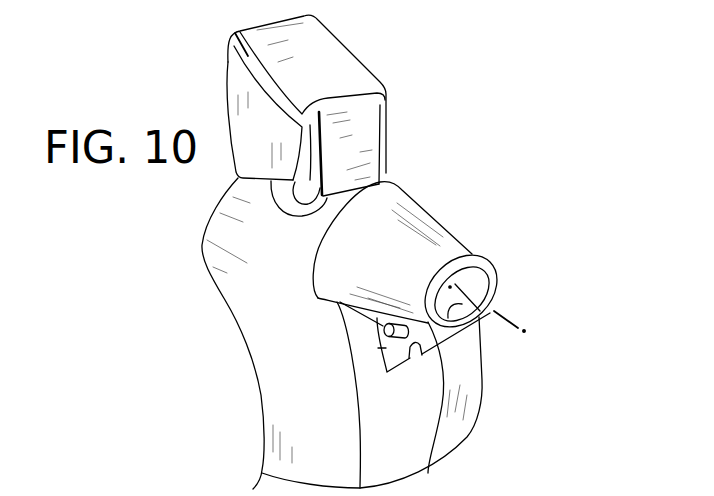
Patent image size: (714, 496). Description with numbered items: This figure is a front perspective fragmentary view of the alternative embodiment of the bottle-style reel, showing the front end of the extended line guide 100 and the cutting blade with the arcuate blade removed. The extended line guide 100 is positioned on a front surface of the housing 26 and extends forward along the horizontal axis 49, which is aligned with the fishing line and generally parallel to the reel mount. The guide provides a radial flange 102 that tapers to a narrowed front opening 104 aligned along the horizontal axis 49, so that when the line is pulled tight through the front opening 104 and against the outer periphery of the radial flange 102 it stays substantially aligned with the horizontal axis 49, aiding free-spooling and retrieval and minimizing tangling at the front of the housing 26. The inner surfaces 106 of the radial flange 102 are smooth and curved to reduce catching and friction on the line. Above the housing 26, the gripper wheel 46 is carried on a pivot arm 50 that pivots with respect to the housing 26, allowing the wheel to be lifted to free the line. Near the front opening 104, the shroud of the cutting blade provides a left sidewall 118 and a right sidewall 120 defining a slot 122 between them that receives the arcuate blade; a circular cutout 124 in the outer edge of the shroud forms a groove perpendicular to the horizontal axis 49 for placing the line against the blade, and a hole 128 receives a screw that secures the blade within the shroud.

The housing 26 is at (220, 257).
The pivot arm 50 is at (333, 53).
The gripper wheel 46 is at (363, 127).
The extended line guide 100 is at (427, 199).
The radial flange 102 is at (455, 250).
The front opening 104 is at (477, 279).
The inner surfaces 106 is at (491, 313).
The horizontal axis 49 is at (502, 311).
The right sidewall 120 is at (447, 330).
The circular cutout 124 is at (429, 375).
The slot 122 is at (405, 392).
The hole 128 is at (383, 330).
The left sidewall 118 is at (386, 348).